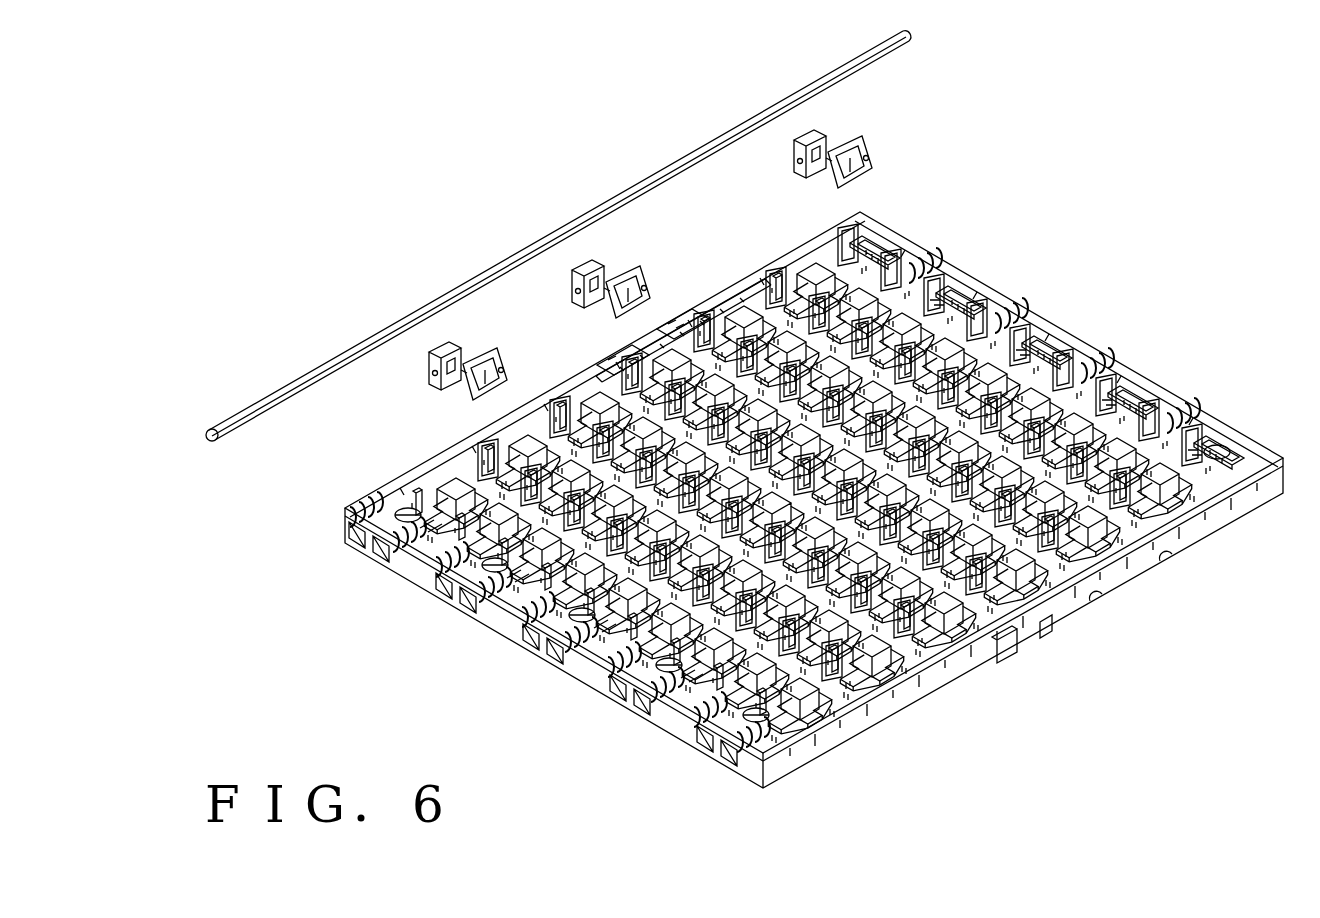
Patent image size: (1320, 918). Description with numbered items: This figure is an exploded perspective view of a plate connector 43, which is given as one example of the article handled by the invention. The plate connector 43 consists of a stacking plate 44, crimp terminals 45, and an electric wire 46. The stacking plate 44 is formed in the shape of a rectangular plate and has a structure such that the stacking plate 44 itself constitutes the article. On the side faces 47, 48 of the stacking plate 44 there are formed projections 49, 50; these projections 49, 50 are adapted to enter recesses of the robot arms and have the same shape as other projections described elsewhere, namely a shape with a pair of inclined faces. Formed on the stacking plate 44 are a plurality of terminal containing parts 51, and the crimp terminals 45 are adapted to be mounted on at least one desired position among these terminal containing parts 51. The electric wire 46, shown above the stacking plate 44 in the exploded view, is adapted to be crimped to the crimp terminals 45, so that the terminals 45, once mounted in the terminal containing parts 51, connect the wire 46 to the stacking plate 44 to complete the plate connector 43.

The plate connector 43 is at (1122, 262).
The stacking plate 44 is at (1168, 382).
The crimp terminals 45 is at (878, 159).
The electric wire 46 is at (626, 190).
The side face 47 is at (700, 305).
The side face 48 is at (1150, 552).
The projection 49 is at (633, 345).
The projection 50 is at (1014, 656).
The terminal containing parts 51 is at (957, 335).